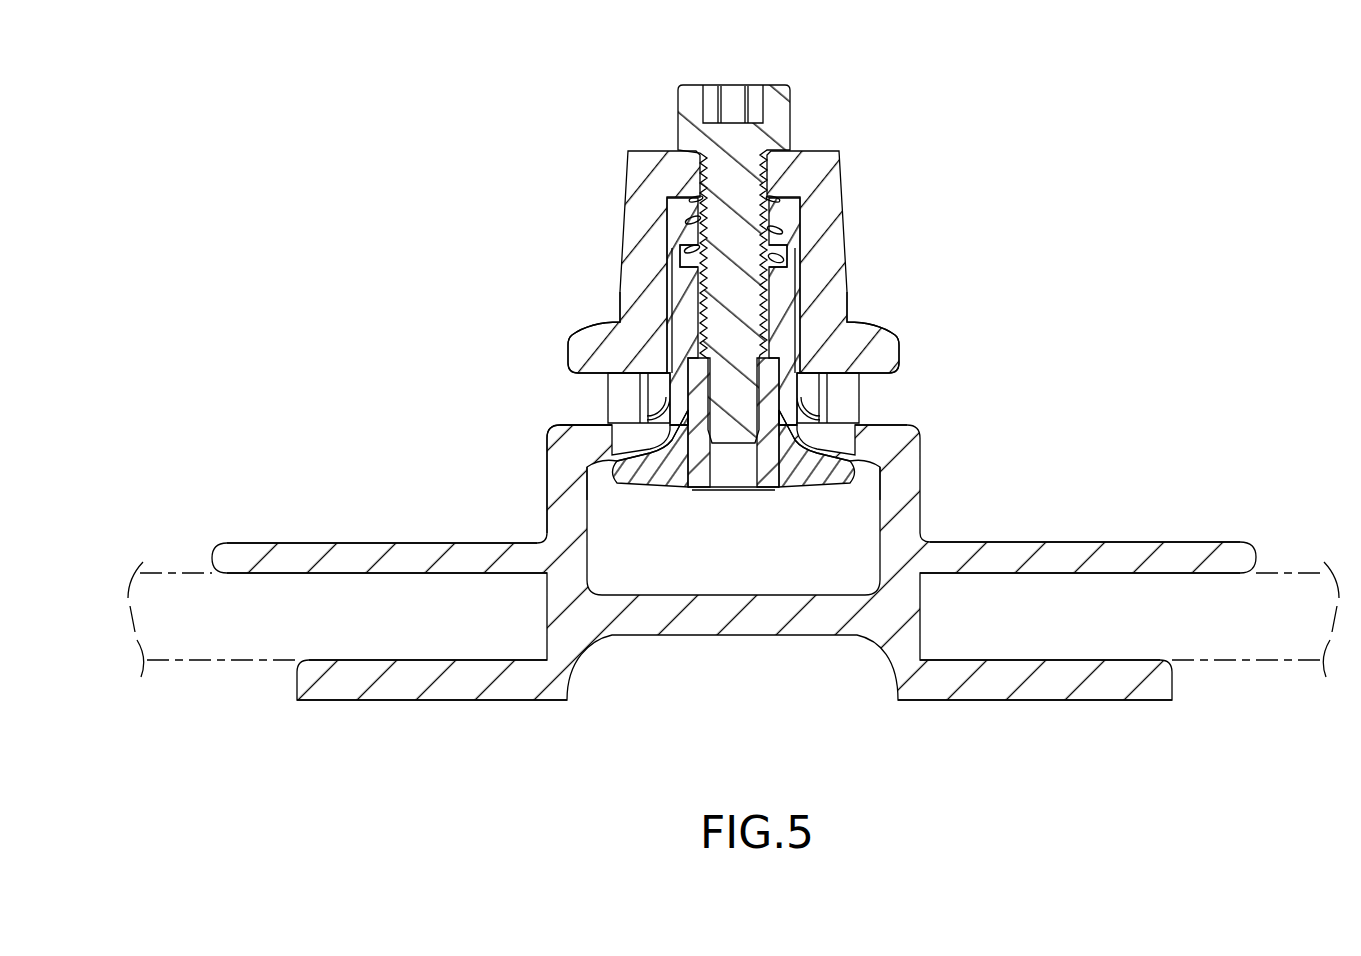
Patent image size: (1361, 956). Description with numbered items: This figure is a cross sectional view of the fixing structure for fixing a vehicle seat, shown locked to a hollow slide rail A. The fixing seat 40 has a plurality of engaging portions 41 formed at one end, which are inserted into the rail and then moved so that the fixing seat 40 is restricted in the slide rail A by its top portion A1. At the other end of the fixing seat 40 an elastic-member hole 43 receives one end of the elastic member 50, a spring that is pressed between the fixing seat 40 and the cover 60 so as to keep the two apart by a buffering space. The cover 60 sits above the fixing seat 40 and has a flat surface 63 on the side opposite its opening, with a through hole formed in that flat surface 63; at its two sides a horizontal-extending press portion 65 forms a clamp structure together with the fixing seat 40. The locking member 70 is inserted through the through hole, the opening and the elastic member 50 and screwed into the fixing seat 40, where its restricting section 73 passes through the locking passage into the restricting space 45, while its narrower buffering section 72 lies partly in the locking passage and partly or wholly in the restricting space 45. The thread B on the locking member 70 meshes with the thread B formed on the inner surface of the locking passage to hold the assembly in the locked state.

The locking member 70 is at (778, 102).
The flat surface 63 is at (648, 152).
The cover 60 is at (736, 234).
The elastic member 50 is at (776, 205).
The elastic-member hole 43 is at (782, 279).
The thread B is at (785, 290).
The press portion 65 is at (583, 345).
The top portion A1 is at (563, 443).
The slide rail A is at (538, 467).
The engaging portions 41 is at (887, 428).
The buffering section 72 is at (692, 403).
The restricting space 45 is at (734, 461).
The restricting section 73 is at (768, 437).
The fixing seat 40 is at (733, 529).